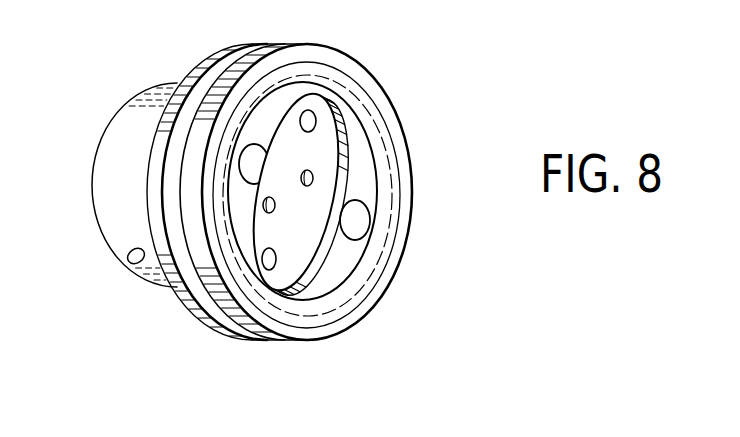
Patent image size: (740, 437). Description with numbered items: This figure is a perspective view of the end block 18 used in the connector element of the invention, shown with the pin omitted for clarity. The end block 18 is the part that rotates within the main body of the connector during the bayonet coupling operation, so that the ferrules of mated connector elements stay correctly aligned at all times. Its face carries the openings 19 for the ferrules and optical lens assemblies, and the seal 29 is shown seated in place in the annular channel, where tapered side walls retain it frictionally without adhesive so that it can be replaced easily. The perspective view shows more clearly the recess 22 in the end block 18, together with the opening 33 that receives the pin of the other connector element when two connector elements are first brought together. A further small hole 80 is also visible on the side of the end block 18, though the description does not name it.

The end block 18 is at (173, 68).
The openings 19 is at (313, 178).
The recess 22 is at (343, 134).
The seal 29 is at (347, 88).
The opening 33 is at (360, 217).
The hole 80 is at (138, 262).